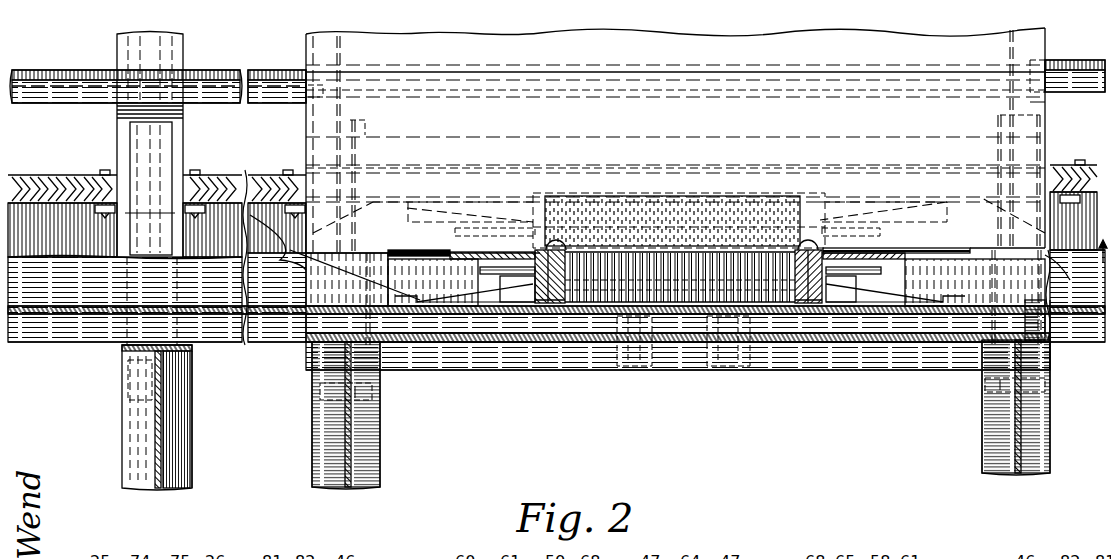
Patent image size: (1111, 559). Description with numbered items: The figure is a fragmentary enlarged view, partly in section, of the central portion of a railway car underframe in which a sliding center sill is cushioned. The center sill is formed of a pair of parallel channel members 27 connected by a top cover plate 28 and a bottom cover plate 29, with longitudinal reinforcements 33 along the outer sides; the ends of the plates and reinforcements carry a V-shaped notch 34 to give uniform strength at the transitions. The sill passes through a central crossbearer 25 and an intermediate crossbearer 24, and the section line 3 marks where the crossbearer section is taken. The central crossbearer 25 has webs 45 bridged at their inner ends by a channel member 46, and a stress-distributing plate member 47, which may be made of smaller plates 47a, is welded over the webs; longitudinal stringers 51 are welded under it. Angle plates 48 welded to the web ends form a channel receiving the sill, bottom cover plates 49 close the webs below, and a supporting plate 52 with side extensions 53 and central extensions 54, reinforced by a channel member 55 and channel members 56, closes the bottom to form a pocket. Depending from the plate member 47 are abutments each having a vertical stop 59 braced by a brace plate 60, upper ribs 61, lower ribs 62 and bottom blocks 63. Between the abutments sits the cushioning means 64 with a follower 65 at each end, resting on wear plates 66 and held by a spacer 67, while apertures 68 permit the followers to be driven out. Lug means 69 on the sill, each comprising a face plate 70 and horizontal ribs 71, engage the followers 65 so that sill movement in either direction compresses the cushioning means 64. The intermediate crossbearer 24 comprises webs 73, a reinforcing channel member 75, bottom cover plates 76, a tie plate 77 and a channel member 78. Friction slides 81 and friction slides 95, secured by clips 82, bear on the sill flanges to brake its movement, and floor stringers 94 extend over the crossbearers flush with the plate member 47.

The section line 3 is at (1103, 261).
The intermediate crossbearer 24 is at (186, 156).
The central crossbearer 25 is at (312, 427).
The channel member 27 is at (270, 330).
The top cover plate 28 is at (234, 256).
The bottom cover plate 29 is at (330, 290).
The longitudinal reinforcement 33 is at (402, 342).
The V-shaped notch 34 is at (306, 338).
The web 45 is at (340, 108).
The channel member 46 is at (353, 128).
The stress-distributing plate member 47 is at (603, 125).
The plate 47a is at (762, 46).
The angle plate 48 is at (470, 174).
The bottom cover plate 49 is at (374, 455).
The longitudinal stringer 51 is at (445, 86).
The supporting plate 52 is at (396, 280).
The side extension 53 is at (362, 402).
The extension 54 is at (628, 370).
The reinforcing channel member 55 is at (357, 390).
The channel member 56 is at (645, 372).
The vertical stop 59 is at (678, 289).
The brace plate 60 is at (412, 253).
The upper rib 61 is at (882, 233).
The lower rib 62 is at (480, 270).
The bottom block 63 is at (470, 256).
The cushioning means 64 is at (690, 300).
The follower 65 is at (558, 308).
The wear plate 66 is at (603, 306).
The spacer 67 is at (610, 200).
The aperture 68 is at (557, 240).
The lug means 69 is at (460, 292).
The face plate 70 is at (823, 210).
The horizontal rib 71 is at (425, 304).
The web 73 is at (158, 58).
The reinforcing channel member 75 is at (137, 241).
The bottom cover plate 76 is at (180, 451).
The tie plate 77 is at (186, 398).
The channel member 78 is at (176, 372).
The friction slide 81 is at (230, 180).
The clip 82 is at (100, 216).
The floor stringer 94 is at (263, 70).
The friction slide 95 is at (38, 181).